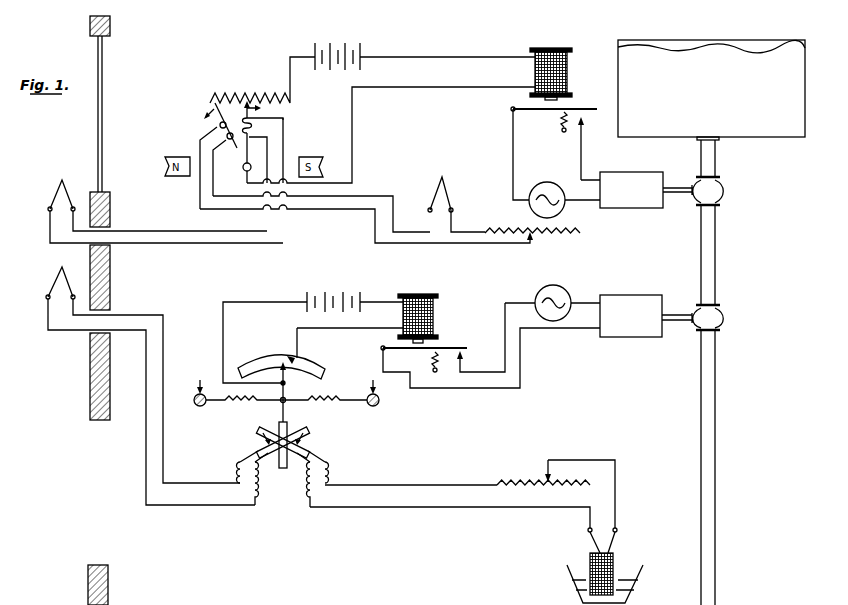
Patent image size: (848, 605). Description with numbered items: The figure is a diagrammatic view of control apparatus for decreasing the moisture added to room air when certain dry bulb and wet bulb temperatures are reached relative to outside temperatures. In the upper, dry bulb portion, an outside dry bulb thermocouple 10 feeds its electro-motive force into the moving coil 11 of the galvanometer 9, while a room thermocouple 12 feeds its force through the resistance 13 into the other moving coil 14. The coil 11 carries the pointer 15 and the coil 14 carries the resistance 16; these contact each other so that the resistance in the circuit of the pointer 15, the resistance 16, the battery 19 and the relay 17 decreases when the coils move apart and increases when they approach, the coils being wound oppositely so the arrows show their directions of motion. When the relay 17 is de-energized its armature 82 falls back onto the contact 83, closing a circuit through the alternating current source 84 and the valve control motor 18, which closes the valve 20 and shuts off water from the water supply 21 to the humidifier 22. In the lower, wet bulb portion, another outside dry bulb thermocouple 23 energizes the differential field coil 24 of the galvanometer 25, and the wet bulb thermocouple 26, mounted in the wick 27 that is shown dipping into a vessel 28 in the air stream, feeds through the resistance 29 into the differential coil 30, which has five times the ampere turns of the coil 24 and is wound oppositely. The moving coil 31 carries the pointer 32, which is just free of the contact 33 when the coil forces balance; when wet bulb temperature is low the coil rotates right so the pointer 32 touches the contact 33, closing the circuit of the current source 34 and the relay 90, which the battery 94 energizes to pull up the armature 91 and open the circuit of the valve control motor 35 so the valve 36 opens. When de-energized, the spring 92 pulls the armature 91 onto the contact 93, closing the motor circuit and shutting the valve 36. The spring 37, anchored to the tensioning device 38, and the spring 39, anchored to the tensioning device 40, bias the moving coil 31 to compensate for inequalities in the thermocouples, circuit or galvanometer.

The galvanometer 9 is at (256, 150).
The dry bulb thermocouple 10 is at (67, 200).
The moving coil 11 is at (256, 122).
The thermocouple 12 is at (446, 199).
The resistance 13 is at (558, 238).
The moving coil 14 is at (221, 126).
The pointer 15 is at (263, 158).
The resistance 16 is at (249, 98).
The relay 17 is at (535, 55).
The valve control motor 18 is at (634, 209).
The battery 19 is at (362, 52).
The valve 20 is at (721, 190).
The water supply 21 is at (624, 76).
The humidifier 22 is at (728, 604).
The dry bulb thermocouple 23 is at (67, 285).
The differential field coil 24 is at (306, 437).
The galvanometer 25 is at (326, 370).
The wet bulb thermocouple 26 is at (617, 541).
The wick 27 is at (613, 560).
The container 28 is at (630, 588).
The resistance 29 is at (510, 478).
The differential coil 30 is at (306, 454).
The moving coil 31 is at (289, 428).
The pointer 32 is at (288, 392).
The contact 33 is at (291, 360).
The current source 34 is at (568, 292).
The valve control motor 35 is at (623, 338).
The valve 36 is at (720, 320).
The spring 37 is at (232, 404).
The tensioning device 38 is at (194, 405).
The spring 39 is at (340, 398).
The tensioning device 40 is at (379, 403).
The armature 82 is at (539, 112).
The contact 83 is at (583, 126).
The alternating current source 84 is at (562, 207).
The relay 90 is at (425, 294).
The armature 91 is at (452, 352).
The spring 92 is at (432, 374).
The contact 93 is at (465, 358).
The battery 94 is at (363, 292).